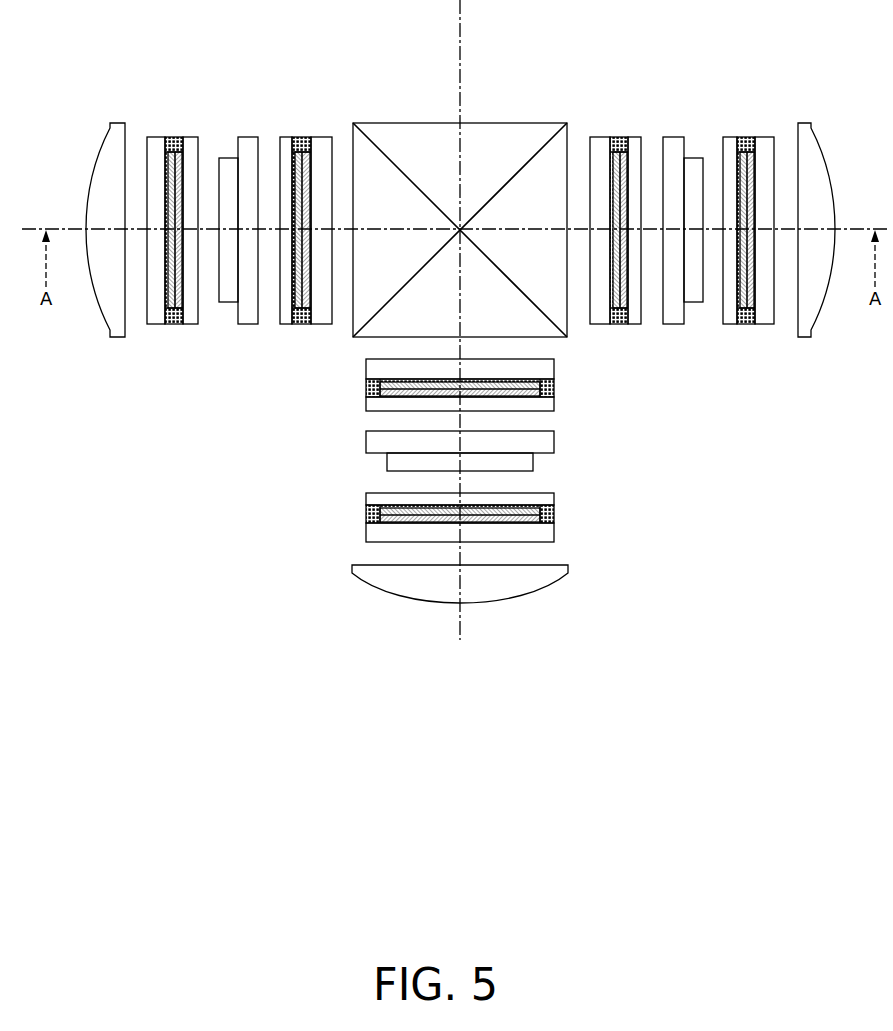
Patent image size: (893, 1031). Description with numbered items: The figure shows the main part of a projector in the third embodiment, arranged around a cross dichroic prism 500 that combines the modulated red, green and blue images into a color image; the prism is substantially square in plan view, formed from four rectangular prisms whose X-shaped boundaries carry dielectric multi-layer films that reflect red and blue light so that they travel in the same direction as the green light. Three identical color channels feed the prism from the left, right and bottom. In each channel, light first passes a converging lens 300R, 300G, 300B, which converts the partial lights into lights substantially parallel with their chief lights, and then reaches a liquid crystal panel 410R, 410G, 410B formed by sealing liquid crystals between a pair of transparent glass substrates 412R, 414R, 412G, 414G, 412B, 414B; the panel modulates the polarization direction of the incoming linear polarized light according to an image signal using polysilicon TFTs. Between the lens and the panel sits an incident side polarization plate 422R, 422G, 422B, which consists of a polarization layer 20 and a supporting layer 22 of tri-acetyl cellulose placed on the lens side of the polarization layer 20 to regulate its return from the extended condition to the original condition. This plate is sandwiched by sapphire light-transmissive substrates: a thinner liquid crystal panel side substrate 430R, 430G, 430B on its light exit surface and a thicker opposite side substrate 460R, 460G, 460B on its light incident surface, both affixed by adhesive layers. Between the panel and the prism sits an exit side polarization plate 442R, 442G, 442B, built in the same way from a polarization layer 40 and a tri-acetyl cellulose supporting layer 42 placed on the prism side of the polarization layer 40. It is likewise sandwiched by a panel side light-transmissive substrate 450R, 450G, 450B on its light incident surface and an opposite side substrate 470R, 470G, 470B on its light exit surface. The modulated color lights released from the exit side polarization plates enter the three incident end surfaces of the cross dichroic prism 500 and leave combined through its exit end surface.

The cross dichroic prism 500 is at (528, 122).
The converging lens 300R is at (117, 337).
The converging lens 300G is at (352, 567).
The converging lens 300B is at (803, 337).
The red light liquid crystal panel 410R is at (232, 172).
The transparent glass substrate 412R is at (227, 157).
The transparent glass substrate 414R is at (250, 137).
The blue light liquid crystal panel 410B is at (686, 172).
The transparent glass substrate 412B is at (693, 157).
The transparent glass substrate 414B is at (670, 137).
The green light liquid crystal panel 410G is at (466, 460).
The transparent glass substrate 412G is at (387, 462).
The transparent glass substrate 414G is at (366, 440).
The incident side polarization plate 422R is at (174, 128).
The incident side polarization plate 422B is at (744, 128).
The incident side polarization plate 422G is at (563, 513).
The exit side polarization plate 442R is at (303, 128).
The exit side polarization plate 442B is at (618, 128).
The exit side polarization plate 442G is at (563, 390).
The light-transmissive substrate 430R is at (192, 137).
The light-transmissive substrate 430B is at (732, 136).
The light-transmissive substrate 430G is at (554, 498).
The light-transmissive substrate 450R is at (288, 136).
The light-transmissive substrate 450B is at (632, 136).
The light-transmissive substrate 450G is at (554, 404).
The light-transmissive substrate 460R is at (158, 137).
The light-transmissive substrate 460B is at (762, 136).
The light-transmissive substrate 460G is at (554, 532).
The light-transmissive substrate 470R is at (320, 136).
The light-transmissive substrate 470B is at (598, 136).
The light-transmissive substrate 470G is at (554, 370).
The polarization layer 20 is at (184, 310).
The supporting layer 22 is at (168, 324).
The polarization layer 40 is at (294, 324).
The supporting layer 42 is at (308, 324).